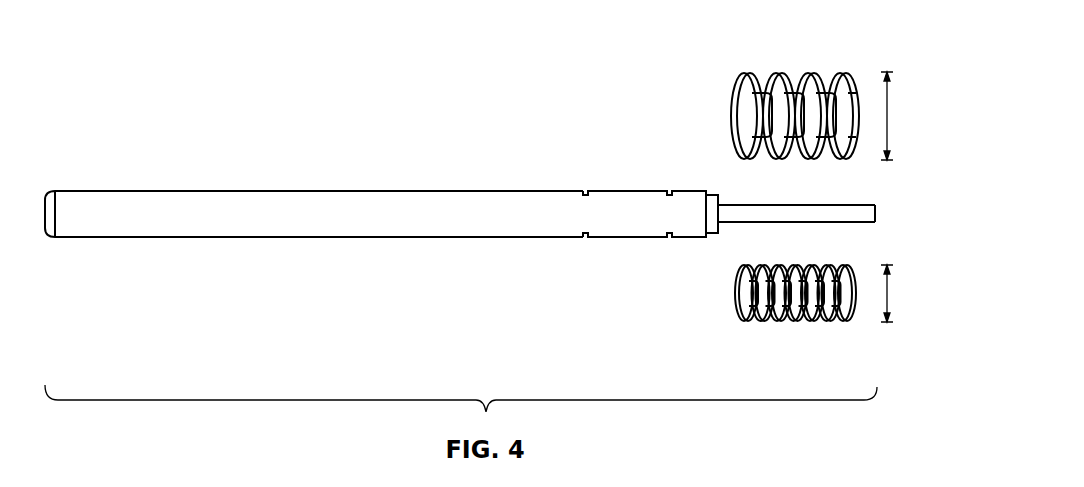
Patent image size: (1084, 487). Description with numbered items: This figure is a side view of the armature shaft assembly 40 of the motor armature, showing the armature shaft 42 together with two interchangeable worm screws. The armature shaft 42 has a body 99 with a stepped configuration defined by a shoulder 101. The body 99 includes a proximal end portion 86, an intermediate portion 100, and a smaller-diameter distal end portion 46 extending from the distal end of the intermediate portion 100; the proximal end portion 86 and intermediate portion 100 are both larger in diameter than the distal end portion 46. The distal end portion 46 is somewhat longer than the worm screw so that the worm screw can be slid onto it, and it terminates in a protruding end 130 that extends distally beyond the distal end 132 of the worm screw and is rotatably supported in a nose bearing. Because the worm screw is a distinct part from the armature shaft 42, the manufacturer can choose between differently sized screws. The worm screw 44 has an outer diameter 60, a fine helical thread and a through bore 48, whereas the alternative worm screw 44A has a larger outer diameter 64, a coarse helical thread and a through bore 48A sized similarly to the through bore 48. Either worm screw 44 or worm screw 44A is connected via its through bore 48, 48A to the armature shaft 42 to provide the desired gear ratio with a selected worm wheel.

The armature shaft assembly 40 is at (270, 270).
The armature shaft 42 is at (265, 204).
The proximal end portion 86 is at (120, 238).
The body 99 is at (453, 203).
The intermediate portion 100 is at (645, 226).
The shoulder 101 is at (711, 182).
The distal end portion 46 is at (806, 212).
The protruding end 130 is at (877, 213).
The worm screw 44A is at (745, 72).
The through bore 48A is at (730, 122).
The outer diameter 64 is at (889, 118).
The worm screw 44 is at (746, 320).
The through bore 48 is at (735, 295).
The distal end 132 is at (855, 298).
The outer diameter 60 is at (889, 293).